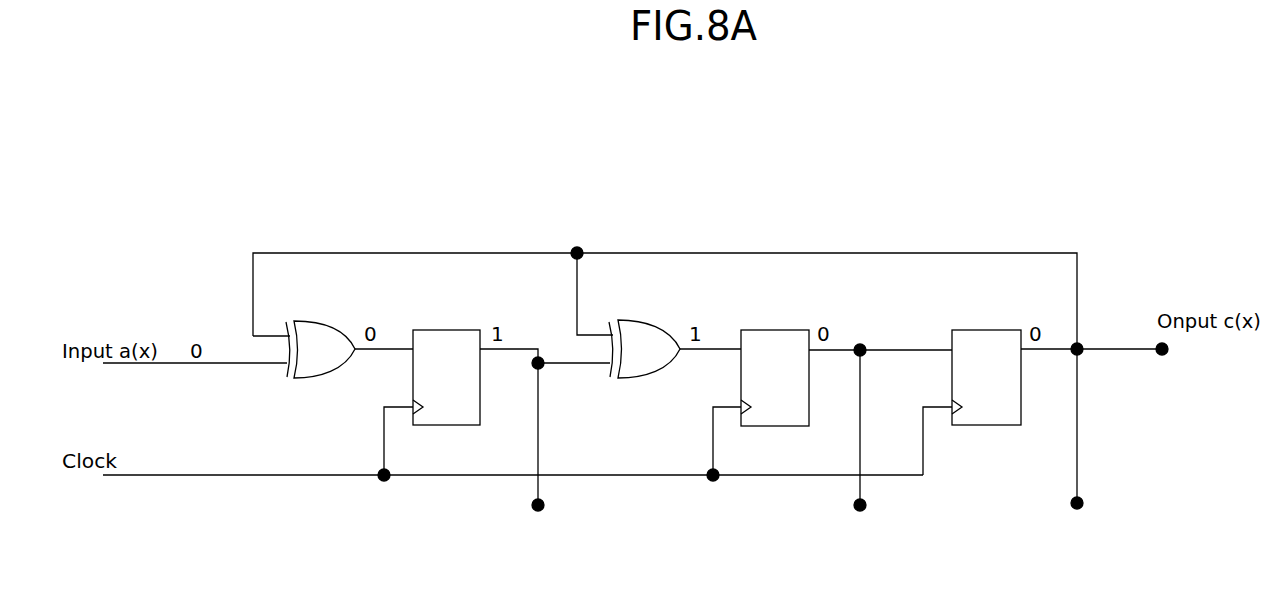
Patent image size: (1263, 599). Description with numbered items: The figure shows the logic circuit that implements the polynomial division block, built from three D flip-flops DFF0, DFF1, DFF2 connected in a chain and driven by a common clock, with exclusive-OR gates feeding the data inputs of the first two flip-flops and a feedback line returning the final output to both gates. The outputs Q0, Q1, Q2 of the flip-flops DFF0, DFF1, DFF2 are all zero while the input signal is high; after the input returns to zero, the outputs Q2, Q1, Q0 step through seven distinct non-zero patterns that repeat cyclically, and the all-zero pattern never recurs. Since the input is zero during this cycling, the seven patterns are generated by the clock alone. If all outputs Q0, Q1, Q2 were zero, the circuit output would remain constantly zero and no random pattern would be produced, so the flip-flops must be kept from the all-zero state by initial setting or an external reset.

The flip-flop DFF0 is at (446, 392).
The flip-flop DFF1 is at (775, 392).
The flip-flop DFF2 is at (986, 394).
The output Q0 is at (536, 452).
The output Q1 is at (860, 446).
The output Q2 is at (1078, 445).